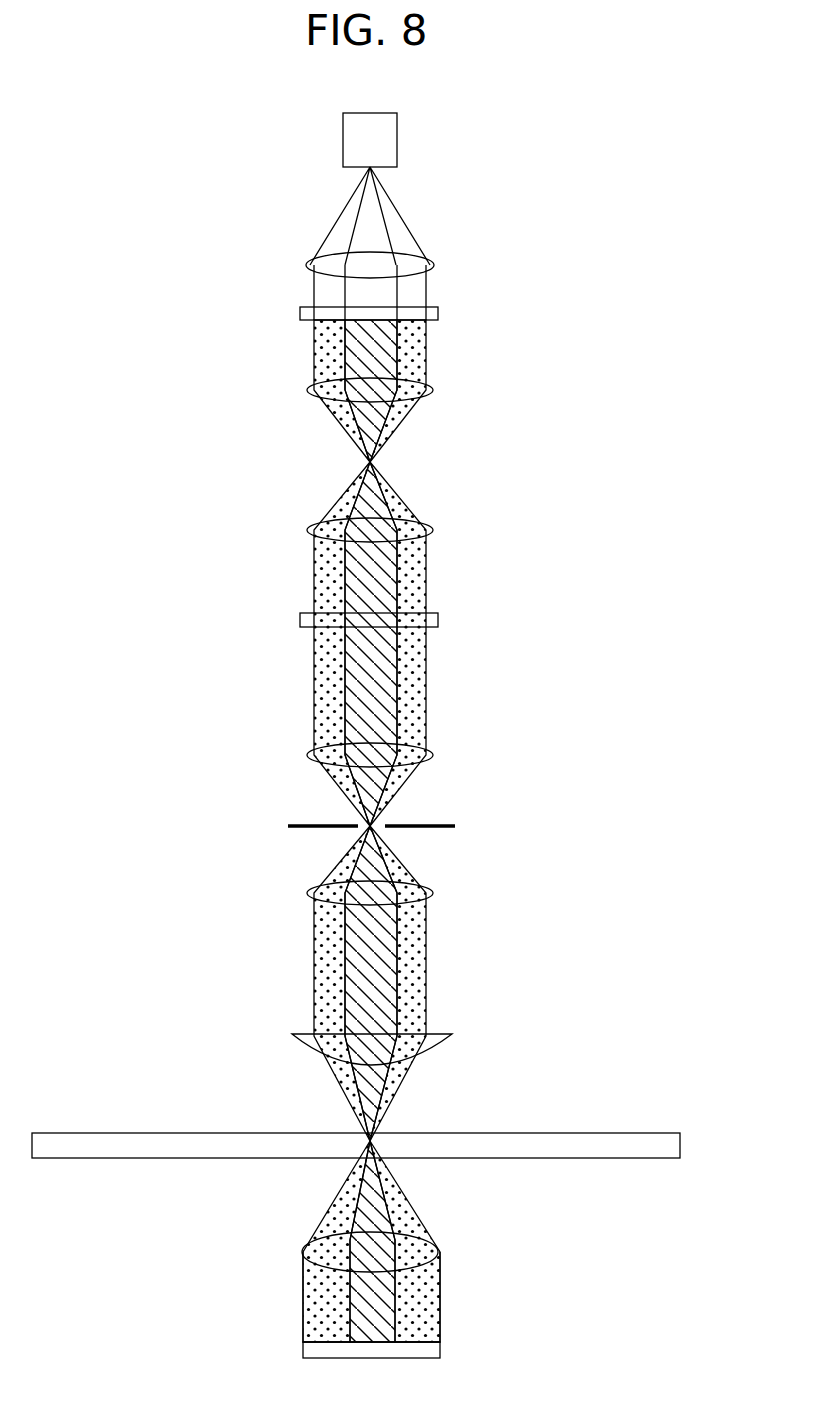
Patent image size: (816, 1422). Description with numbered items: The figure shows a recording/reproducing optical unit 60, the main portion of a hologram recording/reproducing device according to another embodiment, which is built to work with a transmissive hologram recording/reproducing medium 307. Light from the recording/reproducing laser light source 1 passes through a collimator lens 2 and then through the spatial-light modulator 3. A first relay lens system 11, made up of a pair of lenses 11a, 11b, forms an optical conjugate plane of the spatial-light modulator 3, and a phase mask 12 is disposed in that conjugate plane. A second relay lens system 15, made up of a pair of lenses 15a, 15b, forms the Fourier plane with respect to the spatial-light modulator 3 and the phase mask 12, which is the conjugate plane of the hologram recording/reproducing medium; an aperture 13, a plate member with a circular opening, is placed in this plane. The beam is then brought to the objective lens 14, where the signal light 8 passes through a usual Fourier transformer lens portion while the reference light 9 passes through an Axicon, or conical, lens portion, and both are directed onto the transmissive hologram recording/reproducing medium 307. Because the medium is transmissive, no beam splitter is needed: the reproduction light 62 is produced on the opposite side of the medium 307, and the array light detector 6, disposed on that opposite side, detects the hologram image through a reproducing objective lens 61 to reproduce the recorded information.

The recording/reproducing laser light source 1 is at (395, 141).
The collimator lens 2 is at (437, 266).
The spatial-light modulator 3 is at (440, 313).
The recording/reproducing optical unit 60 is at (550, 296).
The first relay lens system 11 is at (422, 478).
The lens 11a is at (307, 393).
The lens 11b is at (307, 533).
The phase mask 12 is at (440, 620).
The second relay lens system 15 is at (424, 842).
The lens 15a is at (307, 758).
The lens 15b is at (307, 896).
The aperture 13 is at (433, 825).
The signal light 8 is at (345, 987).
The reference light 9 is at (413, 973).
The objective lens 14 is at (442, 1038).
The transmissive hologram recording/reproducing medium 307 is at (625, 1133).
The reproducing objective lens 61 is at (417, 1237).
The reproduction light 62 is at (383, 1297).
The array light detector 6 is at (441, 1350).